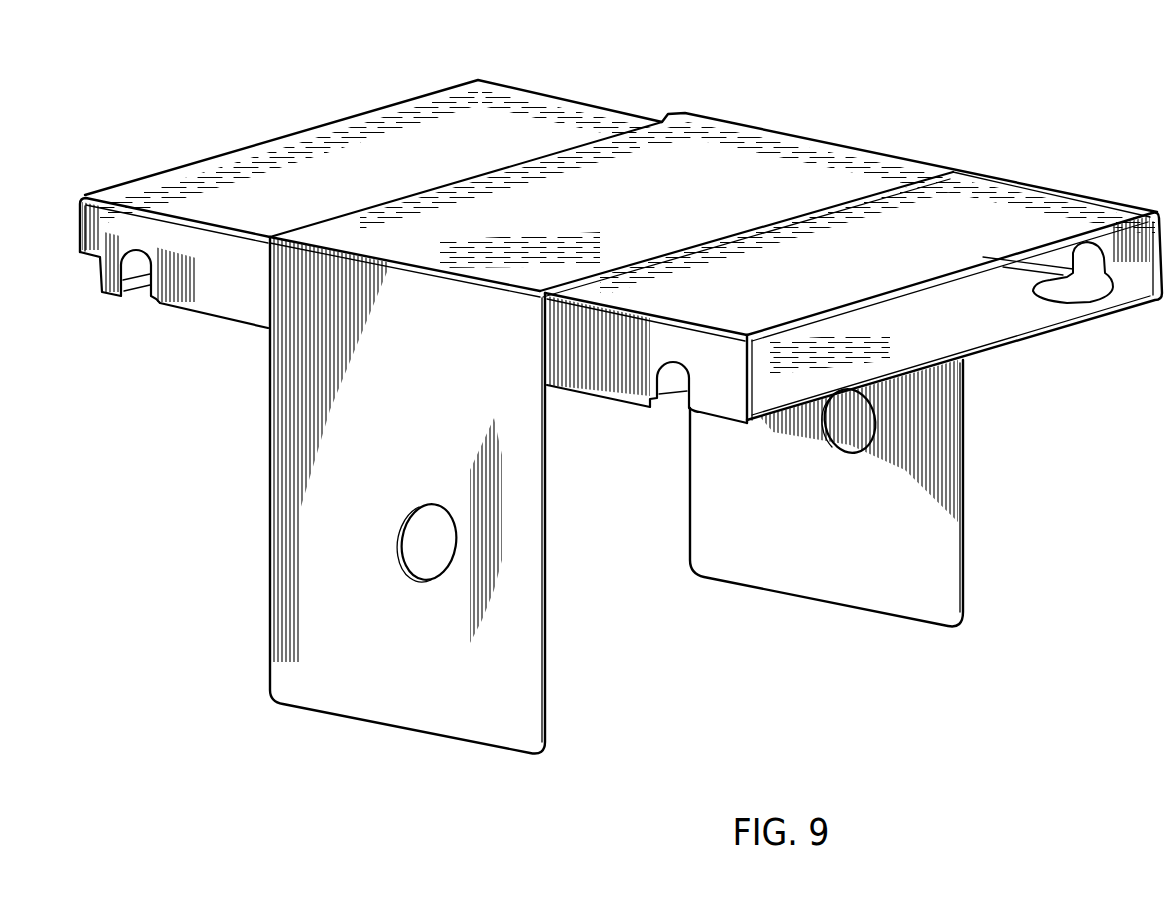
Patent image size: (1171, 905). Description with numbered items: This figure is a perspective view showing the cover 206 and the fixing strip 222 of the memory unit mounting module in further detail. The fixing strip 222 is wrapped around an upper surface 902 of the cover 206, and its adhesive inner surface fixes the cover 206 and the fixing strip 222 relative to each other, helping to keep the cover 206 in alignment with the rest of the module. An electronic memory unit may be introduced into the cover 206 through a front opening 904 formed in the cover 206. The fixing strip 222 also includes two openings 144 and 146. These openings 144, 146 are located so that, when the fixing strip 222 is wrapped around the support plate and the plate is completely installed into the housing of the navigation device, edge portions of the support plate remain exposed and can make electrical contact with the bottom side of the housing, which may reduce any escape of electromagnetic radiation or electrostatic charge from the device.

The upper surface 902 is at (453, 140).
The cover 206 is at (1038, 203).
The front opening 904 is at (1013, 327).
The opening 144 is at (432, 560).
The opening 146 is at (853, 437).
The fixing strip 222 is at (940, 511).